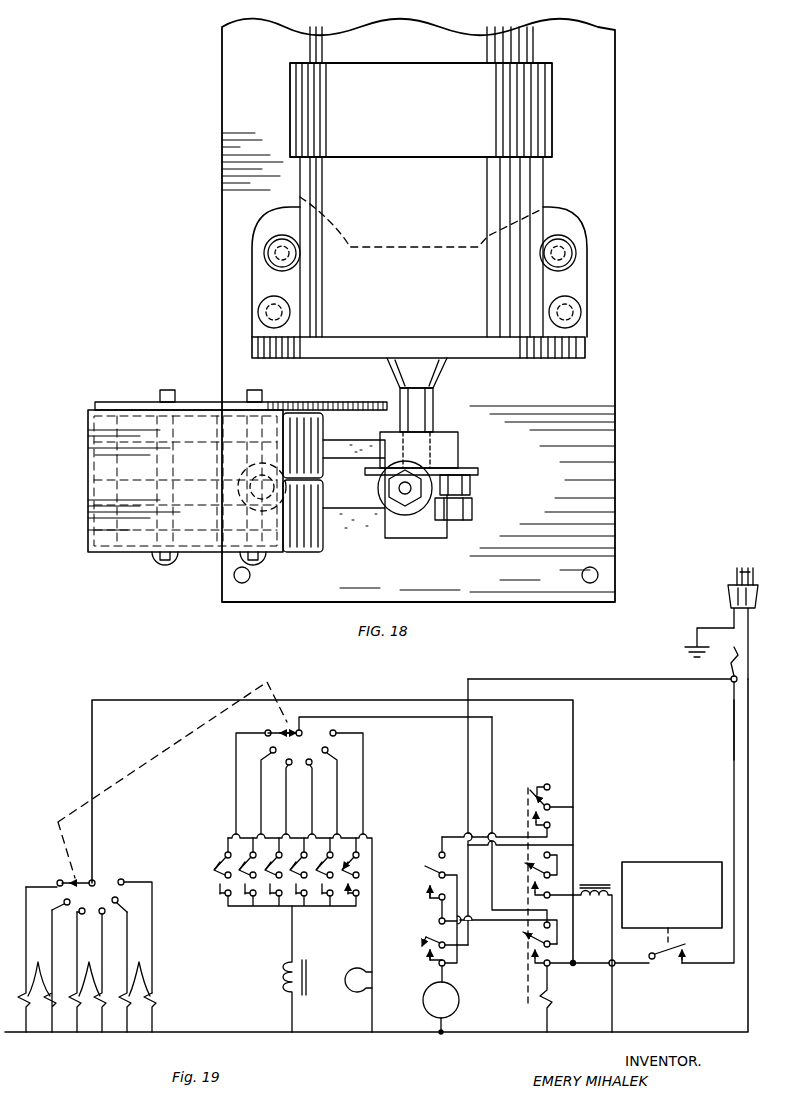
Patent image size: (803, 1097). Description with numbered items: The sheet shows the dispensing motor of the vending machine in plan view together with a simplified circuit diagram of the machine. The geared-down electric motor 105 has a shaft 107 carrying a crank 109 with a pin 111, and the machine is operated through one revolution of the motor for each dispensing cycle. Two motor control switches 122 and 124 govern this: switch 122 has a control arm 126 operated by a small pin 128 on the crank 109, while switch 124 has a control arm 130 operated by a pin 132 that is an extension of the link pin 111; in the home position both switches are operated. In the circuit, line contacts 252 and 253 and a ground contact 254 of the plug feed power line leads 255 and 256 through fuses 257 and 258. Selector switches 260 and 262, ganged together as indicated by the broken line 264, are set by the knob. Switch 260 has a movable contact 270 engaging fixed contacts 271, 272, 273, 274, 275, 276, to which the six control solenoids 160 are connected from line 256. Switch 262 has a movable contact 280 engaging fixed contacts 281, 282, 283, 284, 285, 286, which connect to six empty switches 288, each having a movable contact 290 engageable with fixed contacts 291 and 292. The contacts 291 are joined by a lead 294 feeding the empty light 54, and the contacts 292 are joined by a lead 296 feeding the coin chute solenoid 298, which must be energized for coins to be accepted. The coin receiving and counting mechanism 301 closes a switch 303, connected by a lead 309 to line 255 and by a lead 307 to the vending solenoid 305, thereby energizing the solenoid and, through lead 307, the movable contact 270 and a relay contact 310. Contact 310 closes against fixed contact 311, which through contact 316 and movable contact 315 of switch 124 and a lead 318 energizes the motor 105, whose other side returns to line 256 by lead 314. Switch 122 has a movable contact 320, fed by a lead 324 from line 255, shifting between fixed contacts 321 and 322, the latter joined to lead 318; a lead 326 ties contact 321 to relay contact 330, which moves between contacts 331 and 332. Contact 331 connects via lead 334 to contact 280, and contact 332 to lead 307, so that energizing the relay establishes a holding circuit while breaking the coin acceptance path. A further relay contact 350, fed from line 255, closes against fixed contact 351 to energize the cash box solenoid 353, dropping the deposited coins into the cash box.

In FIG. 18, the electric motor 105 is at (318, 196).
In FIG. 19, the electric motor 105 is at (460, 1002).
In FIG. 18, the motor shaft 107 is at (432, 400).
In FIG. 18, the crank 109 is at (478, 471).
In FIG. 18, the pin 111 is at (472, 485).
In FIG. 18, the motor control switch 122 is at (105, 404).
In FIG. 19, the motor control switch 122 is at (418, 943).
In FIG. 18, the motor control switch 124 is at (106, 548).
In FIG. 19, the motor control switch 124 is at (415, 868).
In FIG. 18, the control arm 126 is at (348, 445).
In FIG. 18, the pin 128 is at (460, 442).
In FIG. 18, the control arm 130 is at (372, 522).
In FIG. 18, the pin 132 is at (472, 512).
In FIG. 19, the line contact 252 is at (736, 580).
In FIG. 19, the line contact 253 is at (747, 568).
In FIG. 19, the ground contact 254 is at (733, 572).
In FIG. 19, the power line lead 255 is at (620, 677).
In FIG. 19, the power line lead 256 is at (494, 1036).
In FIG. 19, the fuse 257 is at (733, 655).
In FIG. 19, the fuse 258 is at (733, 688).
In FIG. 19, the selector switch 260 is at (140, 838).
In FIG. 19, the selector switch 262 is at (320, 732).
In FIG. 19, the broken line 264 is at (175, 740).
In FIG. 19, the movable contact 270 is at (66, 880).
In FIG. 19, the fixed contact 271 is at (58, 880).
In FIG. 19, the fixed contact 272 is at (64, 900).
In FIG. 19, the fixed contact 273 is at (82, 914).
In FIG. 19, the fixed contact 274 is at (104, 914).
In FIG. 19, the fixed contact 275 is at (118, 900).
In FIG. 19, the fixed contact 276 is at (122, 879).
In FIG. 19, the movable contact 280 is at (303, 718).
In FIG. 19, the fixed contact 281 is at (270, 730).
In FIG. 19, the fixed contact 282 is at (275, 748).
In FIG. 19, the fixed contact 283 is at (289, 765).
In FIG. 19, the fixed contact 284 is at (312, 765).
In FIG. 19, the fixed contact 285 is at (330, 748).
In FIG. 19, the fixed contact 286 is at (336, 735).
In FIG. 19, the empty switch 288 is at (214, 880).
In FIG. 19, the movable contact 290 is at (216, 869).
In FIG. 19, the fixed contact 291 is at (220, 856).
In FIG. 19, the fixed contact 292 is at (226, 896).
In FIG. 19, the lead 294 is at (248, 838).
In FIG. 19, the lead 296 is at (240, 908).
In FIG. 19, the coin chute solenoid 298 is at (284, 980).
In FIG. 19, the coin receiving and counting mechanism 301 is at (694, 862).
In FIG. 19, the switch 303 is at (680, 966).
In FIG. 19, the vending solenoid 305 is at (553, 1003).
In FIG. 19, the lead 307 is at (560, 972).
In FIG. 19, the lead 309 is at (733, 766).
In FIG. 19, the movable contact 310 is at (552, 797).
In FIG. 19, the fixed contact 311 is at (530, 820).
In FIG. 19, the lead 314 is at (446, 1030).
In FIG. 19, the movable contact 315 is at (445, 872).
In FIG. 19, the fixed contact 316 is at (428, 866).
In FIG. 19, the lead 318 is at (458, 955).
In FIG. 19, the movable contact 320 is at (422, 936).
In FIG. 19, the fixed contact 321 is at (424, 918).
In FIG. 19, the fixed contact 322 is at (426, 963).
In FIG. 19, the lead 324 is at (466, 794).
In FIG. 19, the lead 326 is at (488, 920).
In FIG. 19, the movable contact 330 is at (552, 942).
In FIG. 19, the contact 331 is at (528, 927).
In FIG. 19, the contact 332 is at (532, 970).
In FIG. 19, the lead 334 is at (493, 738).
In FIG. 19, the movable contact 350 is at (556, 862).
In FIG. 19, the fixed contact 351 is at (538, 886).
In FIG. 19, the cash box solenoid 353 is at (596, 890).
In FIG. 19, the control solenoid 160 is at (87, 959).
In FIG. 19, the empty light 54 is at (356, 990).